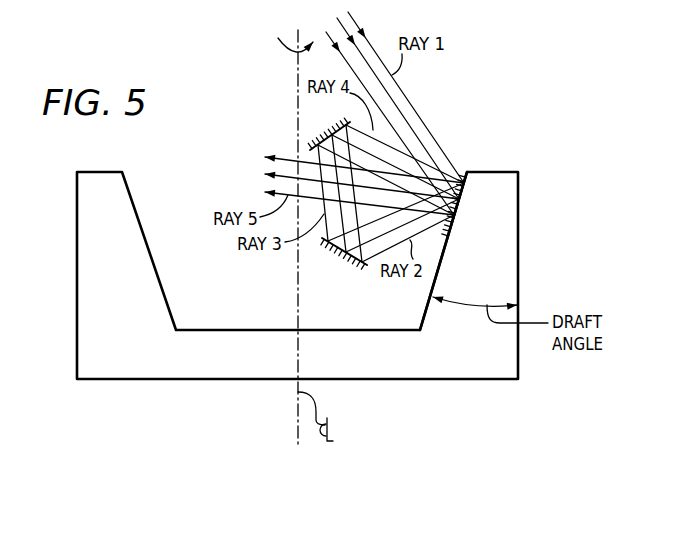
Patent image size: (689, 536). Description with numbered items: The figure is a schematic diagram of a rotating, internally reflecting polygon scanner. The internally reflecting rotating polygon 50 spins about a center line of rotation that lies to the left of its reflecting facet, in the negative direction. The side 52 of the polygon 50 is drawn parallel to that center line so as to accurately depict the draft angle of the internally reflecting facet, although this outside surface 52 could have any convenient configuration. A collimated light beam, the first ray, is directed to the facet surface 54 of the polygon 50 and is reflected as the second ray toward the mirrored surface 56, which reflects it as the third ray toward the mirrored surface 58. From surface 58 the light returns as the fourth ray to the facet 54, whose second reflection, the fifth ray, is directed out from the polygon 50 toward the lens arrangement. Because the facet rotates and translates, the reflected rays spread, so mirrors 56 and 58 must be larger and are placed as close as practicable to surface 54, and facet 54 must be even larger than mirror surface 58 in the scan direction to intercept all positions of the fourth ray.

The internally reflecting rotating polygon 50 is at (517, 362).
The side of the polygon 52 is at (517, 228).
The facet surface 54 is at (433, 283).
The mirrored surface 56 is at (351, 271).
The mirrored surface 58 is at (348, 121).